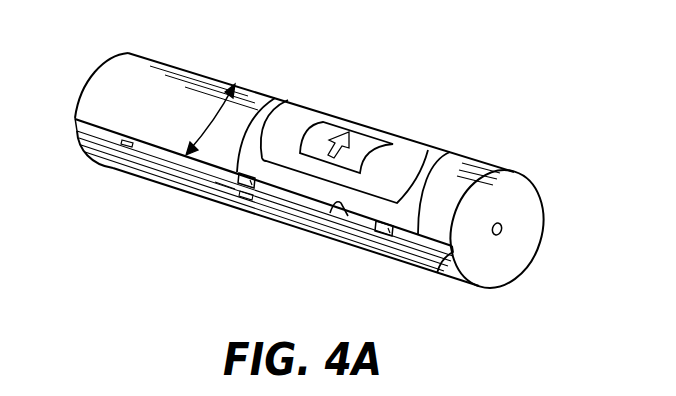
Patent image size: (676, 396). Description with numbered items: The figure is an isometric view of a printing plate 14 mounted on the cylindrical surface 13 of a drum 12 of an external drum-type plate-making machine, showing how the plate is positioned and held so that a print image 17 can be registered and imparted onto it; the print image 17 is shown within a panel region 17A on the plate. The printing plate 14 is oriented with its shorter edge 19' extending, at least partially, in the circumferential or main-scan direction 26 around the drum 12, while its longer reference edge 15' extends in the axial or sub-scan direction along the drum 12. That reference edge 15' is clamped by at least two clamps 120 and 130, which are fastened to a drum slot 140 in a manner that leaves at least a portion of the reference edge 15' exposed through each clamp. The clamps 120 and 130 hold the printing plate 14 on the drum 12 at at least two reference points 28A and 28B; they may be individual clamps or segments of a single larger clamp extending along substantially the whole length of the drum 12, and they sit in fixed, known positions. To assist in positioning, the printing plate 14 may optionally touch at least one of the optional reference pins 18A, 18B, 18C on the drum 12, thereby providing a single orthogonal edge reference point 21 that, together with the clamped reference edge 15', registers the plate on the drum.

The drum 12 is at (545, 228).
The cylindrical surface 13 is at (463, 163).
The printing plate 14 is at (425, 150).
The reference edge 15' is at (263, 198).
The print image 17 is at (340, 124).
The button panel 17A is at (288, 100).
The reference pin 18A is at (123, 144).
The reference pin 18B is at (350, 232).
The reference pin 18C is at (226, 190).
The shorter edge 19' is at (248, 102).
The orthogonal edge reference point 21 is at (341, 210).
The main-scan direction 26 is at (206, 104).
The reference point 28A is at (381, 237).
The reference point 28B is at (238, 183).
The clamp 120 is at (372, 238).
The clamp 130 is at (246, 198).
The drum slot 140 is at (445, 250).